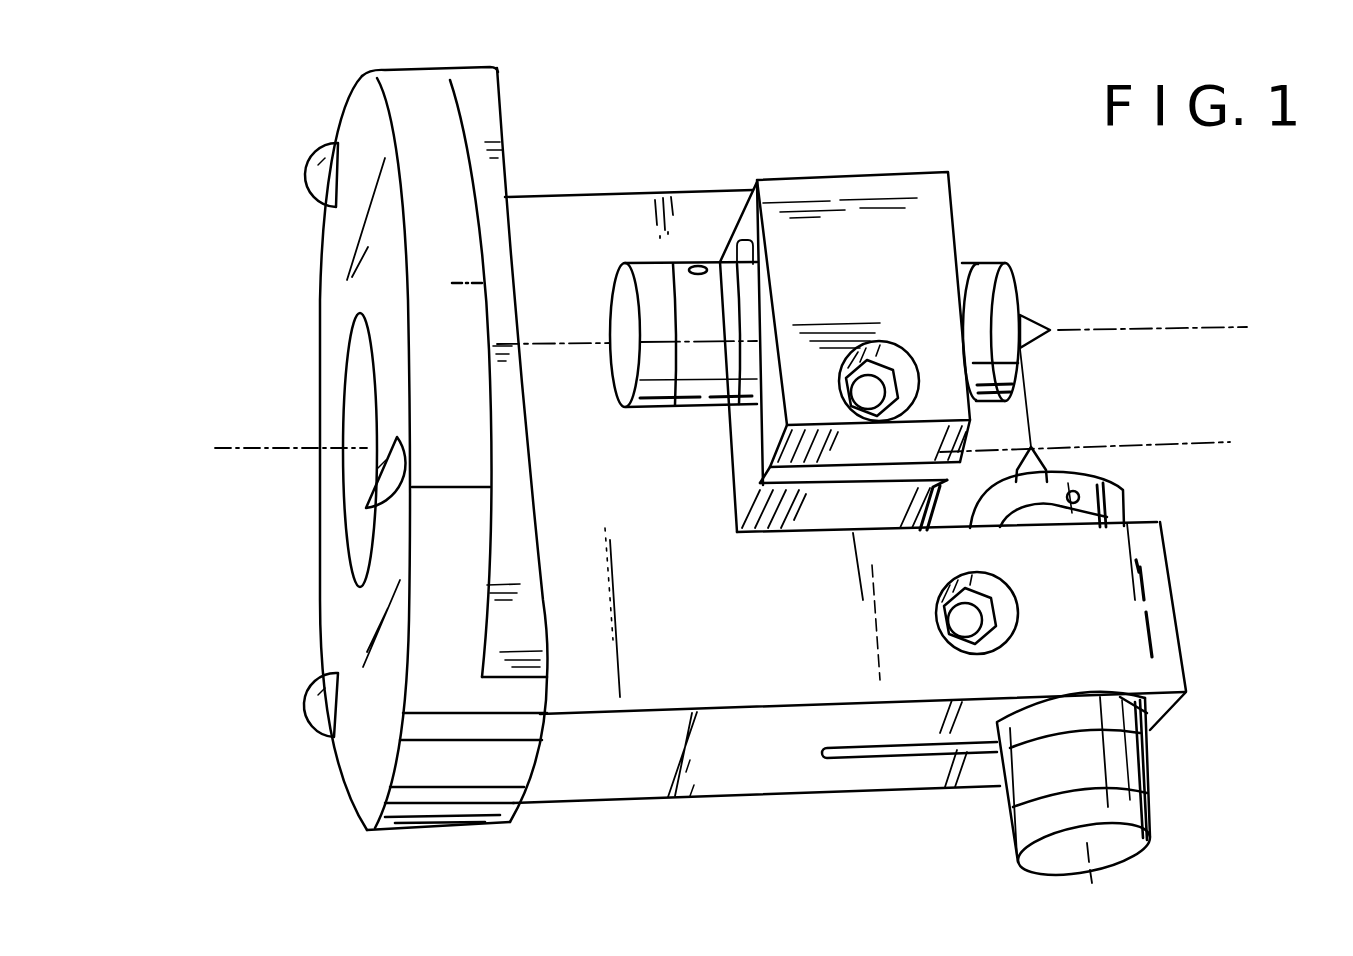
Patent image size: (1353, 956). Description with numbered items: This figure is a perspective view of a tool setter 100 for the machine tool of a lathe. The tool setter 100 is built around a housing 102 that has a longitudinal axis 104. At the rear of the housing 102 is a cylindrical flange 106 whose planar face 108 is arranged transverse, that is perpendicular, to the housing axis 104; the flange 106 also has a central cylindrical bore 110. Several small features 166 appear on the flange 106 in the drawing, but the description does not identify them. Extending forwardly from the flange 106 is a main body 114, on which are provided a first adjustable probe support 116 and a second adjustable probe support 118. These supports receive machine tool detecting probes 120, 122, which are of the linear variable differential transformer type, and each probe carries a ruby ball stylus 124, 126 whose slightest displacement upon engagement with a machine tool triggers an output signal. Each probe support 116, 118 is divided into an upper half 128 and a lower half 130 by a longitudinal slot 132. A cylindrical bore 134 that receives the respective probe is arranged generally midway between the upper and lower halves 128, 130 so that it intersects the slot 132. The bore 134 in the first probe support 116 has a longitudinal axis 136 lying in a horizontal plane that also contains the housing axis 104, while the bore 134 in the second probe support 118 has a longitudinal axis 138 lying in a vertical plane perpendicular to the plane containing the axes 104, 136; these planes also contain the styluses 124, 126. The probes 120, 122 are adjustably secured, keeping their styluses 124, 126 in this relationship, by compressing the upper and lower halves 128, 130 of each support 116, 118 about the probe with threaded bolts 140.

The tool setter 100 is at (705, 155).
The housing 102 is at (561, 196).
The longitudinal axis 104 is at (250, 450).
The cylindrical flange 106 is at (393, 98).
The planar face 108 is at (347, 238).
The central cylindrical bore 110 is at (357, 348).
The main body 114 is at (635, 763).
The first adjustable probe support 116 is at (855, 175).
The second adjustable probe support 118 is at (1177, 625).
The machine tool detecting probe 120 is at (983, 263).
The machine tool detecting probe 122 is at (1108, 497).
The ruby ball stylus 124 is at (1050, 330).
The ruby ball stylus 126 is at (1031, 447).
The upper half 128 is at (922, 213).
The lower half 130 is at (770, 520).
The longitudinal slot 132 is at (832, 478).
The cylindrical bore 134 is at (768, 325).
The longitudinal axis 136 is at (1133, 328).
The longitudinal axis 138 is at (1093, 842).
The threaded bolt 140 is at (868, 388).
The balancing lugs 166 is at (315, 167).